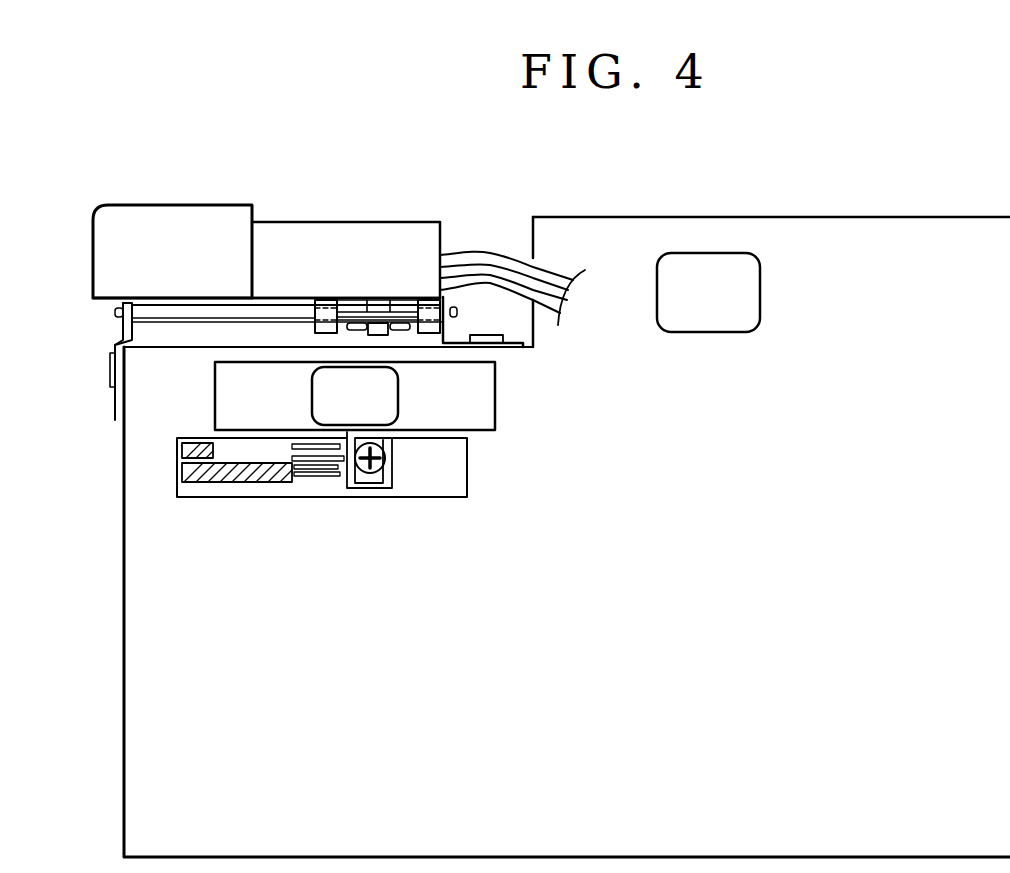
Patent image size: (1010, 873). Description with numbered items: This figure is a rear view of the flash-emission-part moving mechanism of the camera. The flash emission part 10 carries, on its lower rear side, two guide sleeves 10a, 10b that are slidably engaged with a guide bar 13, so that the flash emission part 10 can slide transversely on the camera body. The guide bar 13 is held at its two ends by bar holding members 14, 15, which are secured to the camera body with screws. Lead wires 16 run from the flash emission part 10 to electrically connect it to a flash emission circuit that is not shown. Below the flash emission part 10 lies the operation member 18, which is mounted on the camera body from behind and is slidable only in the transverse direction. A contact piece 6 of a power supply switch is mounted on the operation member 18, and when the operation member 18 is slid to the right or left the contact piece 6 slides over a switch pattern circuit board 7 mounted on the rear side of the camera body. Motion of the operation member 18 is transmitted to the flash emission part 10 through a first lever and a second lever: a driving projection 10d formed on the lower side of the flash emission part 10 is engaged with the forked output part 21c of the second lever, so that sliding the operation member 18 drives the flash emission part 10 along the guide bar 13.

The flash emission part 10 is at (190, 232).
The guide bar 13 is at (277, 310).
The guide sleeve 10a is at (326, 310).
The guide sleeve 10b is at (430, 310).
The driving projection 10d is at (382, 327).
The lead wires 16 is at (492, 253).
The bar holding member 14 is at (123, 330).
The bar holding member 15 is at (512, 347).
The output part of the second lever 21c is at (353, 330).
The operation member 18 is at (237, 412).
The switch pattern circuit board 7 is at (213, 488).
The contact piece of power supply switch 6 is at (338, 483).